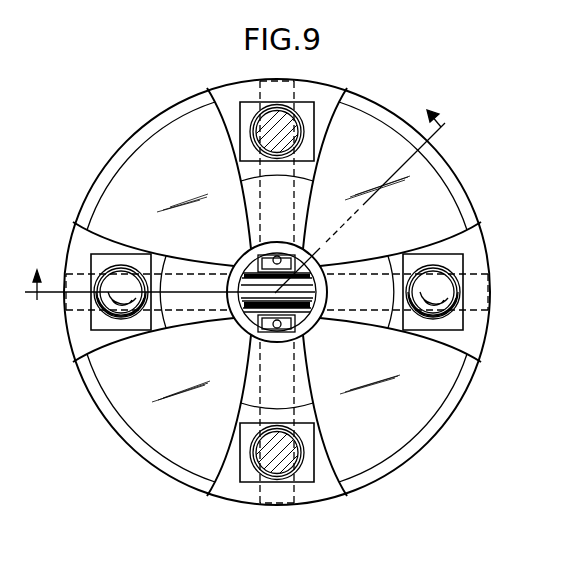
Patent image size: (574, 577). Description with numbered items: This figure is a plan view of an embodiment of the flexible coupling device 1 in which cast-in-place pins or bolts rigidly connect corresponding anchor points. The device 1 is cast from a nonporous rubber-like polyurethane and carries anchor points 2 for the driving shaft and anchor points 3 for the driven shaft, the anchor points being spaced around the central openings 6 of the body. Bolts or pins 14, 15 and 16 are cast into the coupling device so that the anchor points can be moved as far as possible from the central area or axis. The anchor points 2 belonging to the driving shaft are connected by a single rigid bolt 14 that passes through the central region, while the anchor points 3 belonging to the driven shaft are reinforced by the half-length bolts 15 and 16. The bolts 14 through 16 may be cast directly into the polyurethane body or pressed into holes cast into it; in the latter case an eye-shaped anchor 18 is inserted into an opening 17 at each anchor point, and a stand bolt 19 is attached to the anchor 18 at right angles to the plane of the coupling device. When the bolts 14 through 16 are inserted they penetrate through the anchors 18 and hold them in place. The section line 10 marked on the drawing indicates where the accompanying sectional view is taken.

The flexible coupling device 1 is at (105, 156).
The anchor points 2 is at (484, 244).
The anchor points 3 is at (234, 88).
The central openings 6 is at (256, 318).
The section line 10 is at (235, 194).
The rigid bolt 14 is at (255, 282).
The half-length bolt 15 is at (299, 90).
The half-length bolt 16 is at (291, 392).
The opening 17 is at (315, 125).
The eye-shaped anchors 18 is at (315, 157).
The stand bolts 19 is at (250, 128).